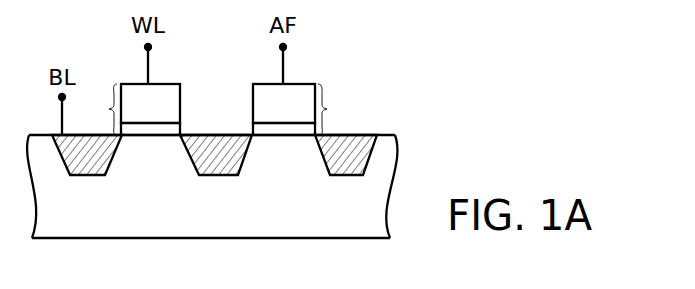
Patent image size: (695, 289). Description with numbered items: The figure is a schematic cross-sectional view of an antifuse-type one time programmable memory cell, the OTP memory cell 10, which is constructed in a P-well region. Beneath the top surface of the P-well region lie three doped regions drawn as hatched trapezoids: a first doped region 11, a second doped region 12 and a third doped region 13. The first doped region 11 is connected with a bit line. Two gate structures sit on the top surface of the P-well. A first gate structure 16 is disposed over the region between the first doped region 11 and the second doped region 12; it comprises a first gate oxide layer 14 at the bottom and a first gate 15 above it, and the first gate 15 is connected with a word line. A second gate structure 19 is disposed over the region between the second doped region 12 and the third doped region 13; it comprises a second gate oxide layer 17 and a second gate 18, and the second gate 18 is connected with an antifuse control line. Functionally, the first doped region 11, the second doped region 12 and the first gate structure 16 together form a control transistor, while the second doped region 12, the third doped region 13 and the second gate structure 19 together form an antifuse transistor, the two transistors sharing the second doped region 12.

The OTP memory cell 10 is at (393, 64).
The first doped region 11 is at (100, 176).
The second doped region 12 is at (214, 176).
The third doped region 13 is at (335, 176).
The first gate oxide layer 14 is at (182, 129).
The first gate 15 is at (150, 103).
The first gate structure 16 is at (98, 109).
The second gate oxide layer 17 is at (251, 129).
The second gate 18 is at (284, 103).
The second gate structure 19 is at (336, 109).